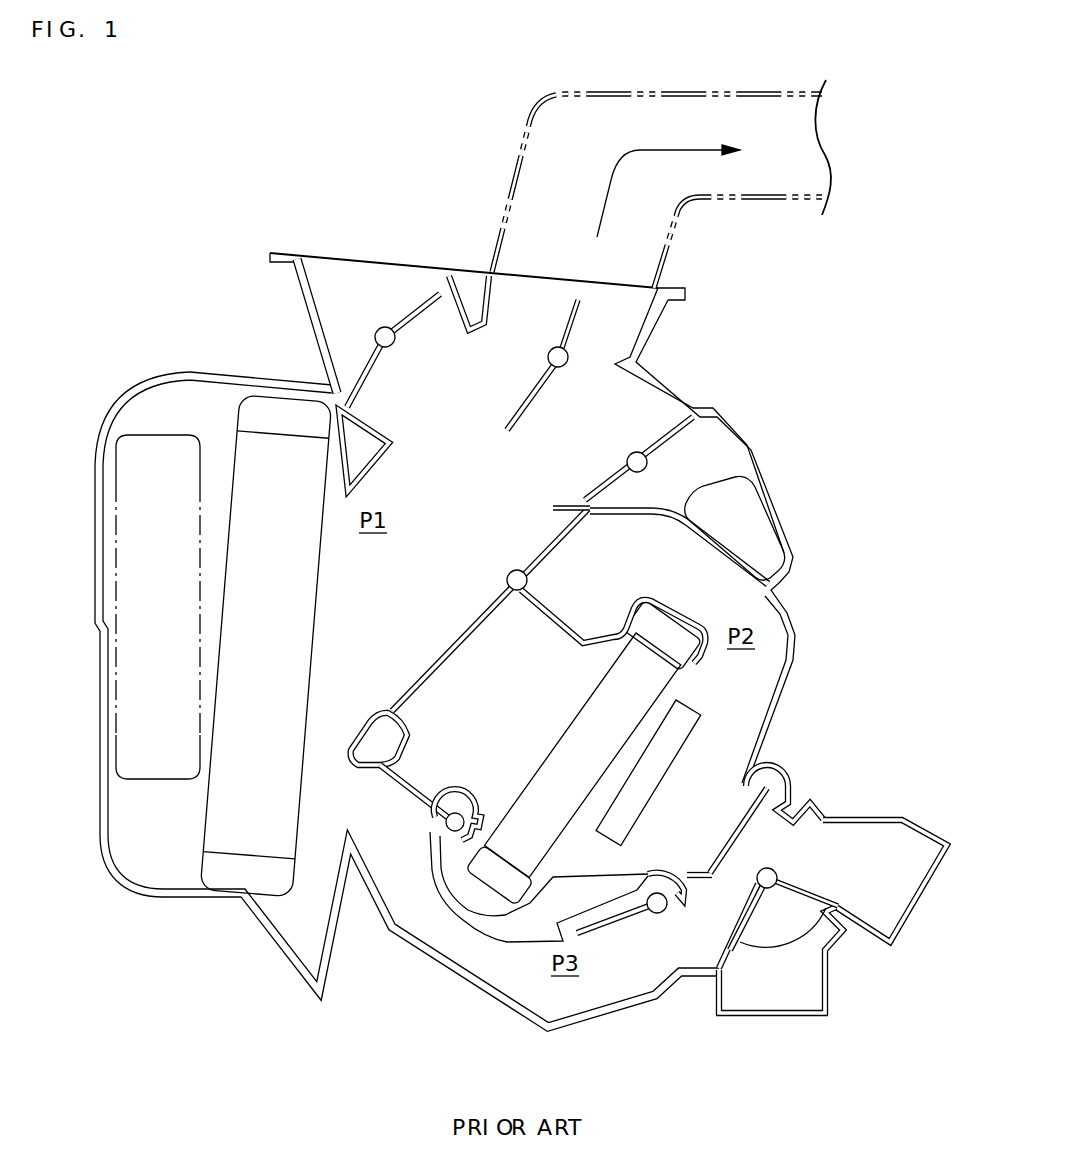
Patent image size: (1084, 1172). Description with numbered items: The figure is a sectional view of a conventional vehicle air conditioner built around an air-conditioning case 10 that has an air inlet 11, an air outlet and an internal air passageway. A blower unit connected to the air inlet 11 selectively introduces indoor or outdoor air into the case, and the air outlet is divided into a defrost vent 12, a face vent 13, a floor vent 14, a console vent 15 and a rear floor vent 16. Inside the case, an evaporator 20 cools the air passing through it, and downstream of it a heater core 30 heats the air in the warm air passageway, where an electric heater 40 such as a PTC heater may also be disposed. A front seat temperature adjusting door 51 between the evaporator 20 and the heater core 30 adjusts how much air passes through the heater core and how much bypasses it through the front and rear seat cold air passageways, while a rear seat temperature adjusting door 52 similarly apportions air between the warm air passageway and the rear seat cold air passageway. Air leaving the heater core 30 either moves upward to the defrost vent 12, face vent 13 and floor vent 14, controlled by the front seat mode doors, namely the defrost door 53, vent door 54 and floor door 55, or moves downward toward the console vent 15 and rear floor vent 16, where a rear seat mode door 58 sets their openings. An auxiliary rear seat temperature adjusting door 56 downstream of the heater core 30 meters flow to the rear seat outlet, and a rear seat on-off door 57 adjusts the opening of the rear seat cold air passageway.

The air-conditioning case 10 is at (262, 380).
The air inlet 11 is at (155, 782).
The defrost vent 12 is at (349, 282).
The face vent 13 is at (610, 290).
The floor vent 14 is at (752, 535).
The console vent 15 is at (893, 900).
The rear floor vent 16 is at (789, 997).
The evaporator 20 is at (237, 880).
The heater core 30 is at (517, 850).
The electric heater 40 is at (663, 778).
The front seat temperature adjusting door 51 is at (454, 652).
The rear seat temperature adjusting door 52 is at (408, 800).
The defrost door 53 is at (404, 305).
The vent door 54 is at (545, 385).
The floor door 55 is at (665, 445).
The auxiliary rear seat temperature adjusting door 56 is at (738, 832).
The rear seat on-off door 57 is at (607, 923).
The rear seat mode door 58 is at (757, 898).